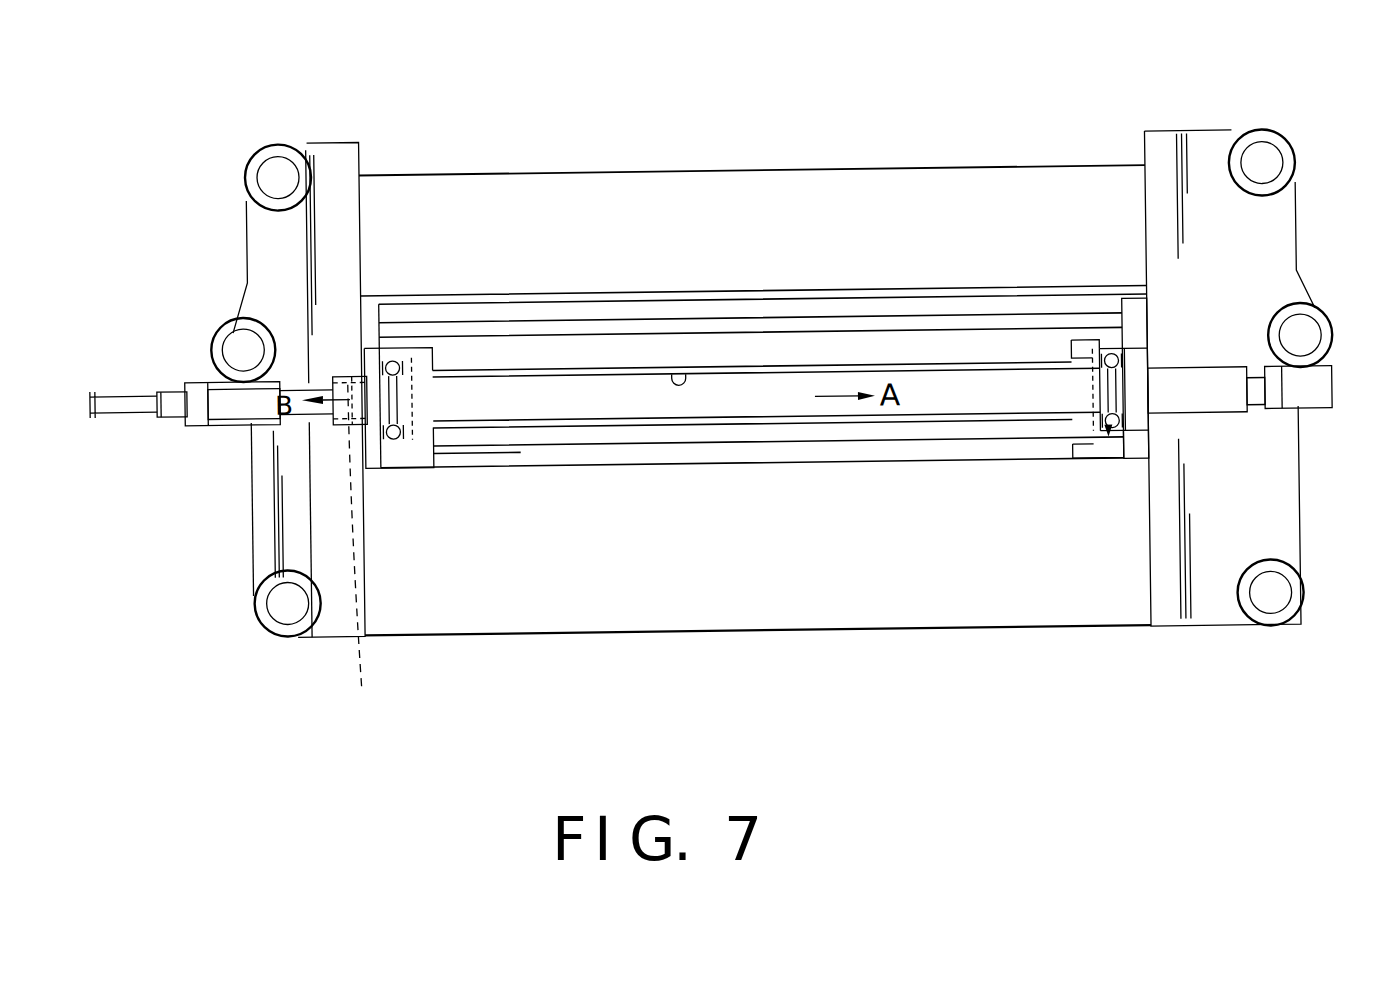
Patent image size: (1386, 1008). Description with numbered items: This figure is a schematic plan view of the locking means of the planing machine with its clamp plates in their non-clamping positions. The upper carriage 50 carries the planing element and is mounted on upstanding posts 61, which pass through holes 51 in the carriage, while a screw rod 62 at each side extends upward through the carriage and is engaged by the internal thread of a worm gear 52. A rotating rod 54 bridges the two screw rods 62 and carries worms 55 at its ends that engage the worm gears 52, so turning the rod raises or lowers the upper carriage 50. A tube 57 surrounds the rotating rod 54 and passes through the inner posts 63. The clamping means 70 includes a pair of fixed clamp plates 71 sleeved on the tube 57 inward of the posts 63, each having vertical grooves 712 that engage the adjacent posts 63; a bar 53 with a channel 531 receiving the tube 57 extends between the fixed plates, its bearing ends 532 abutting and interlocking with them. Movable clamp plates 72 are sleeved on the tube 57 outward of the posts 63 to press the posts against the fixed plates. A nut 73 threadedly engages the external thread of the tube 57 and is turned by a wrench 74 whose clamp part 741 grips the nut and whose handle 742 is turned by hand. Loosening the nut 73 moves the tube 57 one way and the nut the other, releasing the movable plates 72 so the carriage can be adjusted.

The upper carriage 50 is at (990, 163).
The hole 51 is at (300, 162).
The worm gear 52 is at (226, 346).
The bar 53 is at (838, 367).
The channel 531 is at (672, 374).
The bearing end 532 is at (1095, 340).
The rotating rod 54 is at (113, 392).
The worm 55 is at (1322, 398).
The tube 57 is at (770, 384).
The post 61 is at (276, 160).
The screw rod 62 is at (245, 332).
The post 63 is at (1117, 362).
The clamping means 70 is at (403, 441).
The fixed clamp plate 71 is at (1110, 360).
The movable clamp plate 72 is at (1132, 389).
The nut 73 is at (364, 557).
The wrench 74 is at (318, 373).
The clamp part 741 is at (343, 371).
The handle 742 is at (173, 400).
The vertical groove 712 is at (1108, 438).